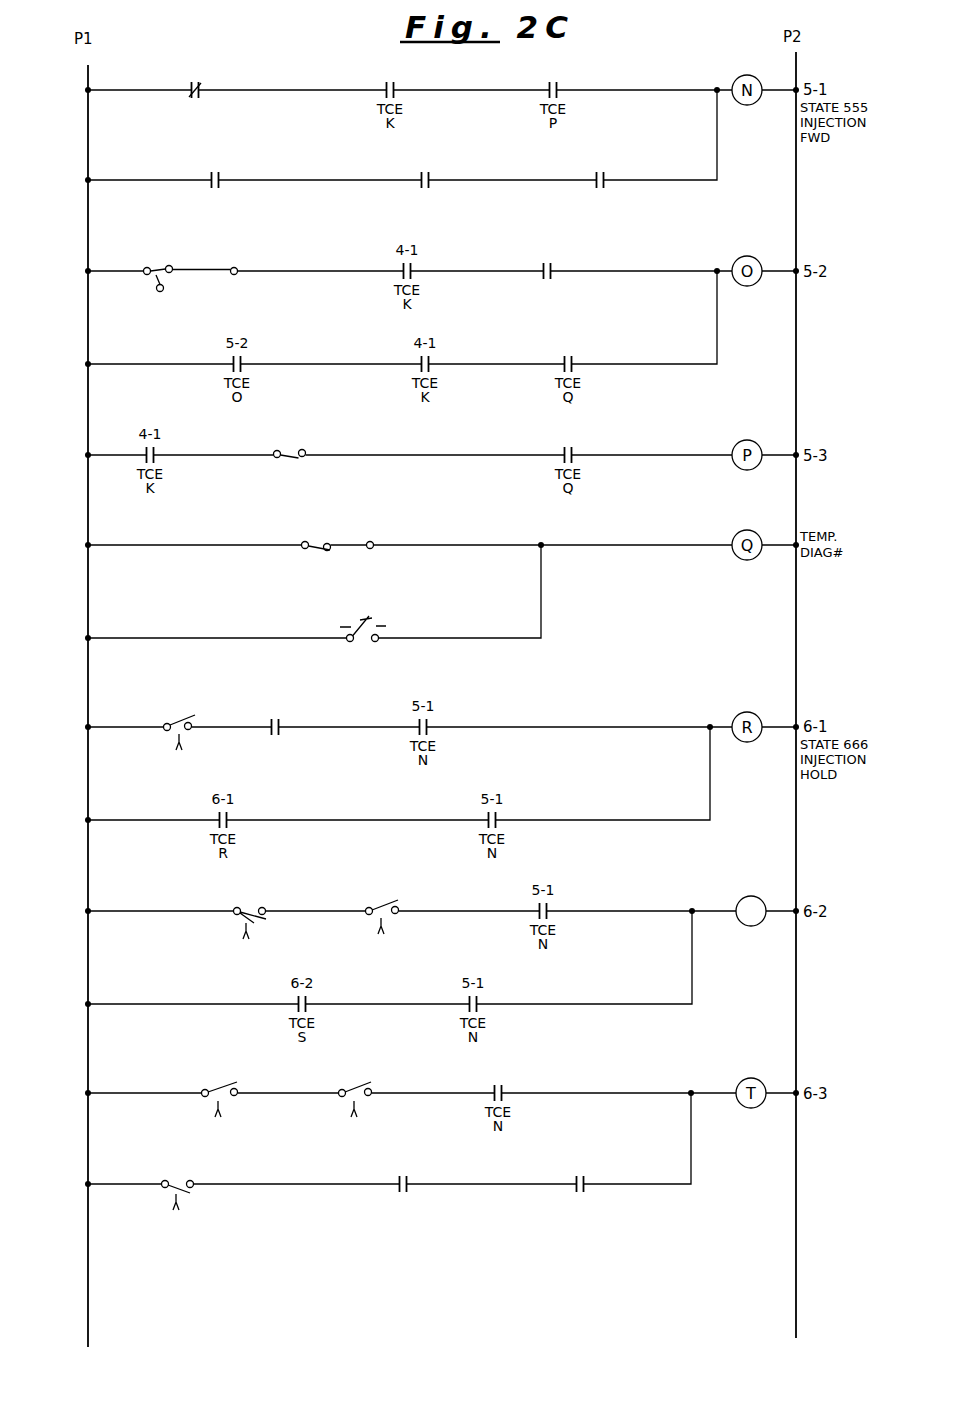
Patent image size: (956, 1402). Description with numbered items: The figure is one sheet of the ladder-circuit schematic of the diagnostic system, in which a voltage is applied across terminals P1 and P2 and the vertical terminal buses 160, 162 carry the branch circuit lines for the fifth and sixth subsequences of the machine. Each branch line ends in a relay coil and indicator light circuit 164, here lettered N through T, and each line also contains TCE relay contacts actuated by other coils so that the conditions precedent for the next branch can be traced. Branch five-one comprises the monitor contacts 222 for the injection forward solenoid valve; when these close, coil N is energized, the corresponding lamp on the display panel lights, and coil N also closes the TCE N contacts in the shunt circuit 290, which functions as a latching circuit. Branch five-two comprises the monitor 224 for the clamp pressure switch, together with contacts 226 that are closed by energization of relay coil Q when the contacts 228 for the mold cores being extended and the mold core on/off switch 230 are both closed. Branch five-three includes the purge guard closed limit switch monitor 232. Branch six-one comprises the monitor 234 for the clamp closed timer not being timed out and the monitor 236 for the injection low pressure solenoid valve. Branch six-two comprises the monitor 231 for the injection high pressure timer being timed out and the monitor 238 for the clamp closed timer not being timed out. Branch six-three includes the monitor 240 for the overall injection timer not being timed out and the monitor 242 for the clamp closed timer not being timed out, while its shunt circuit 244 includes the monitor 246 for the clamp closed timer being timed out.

The terminal bus 160 is at (88, 103).
The power rail P2 162 is at (797, 200).
The relay coil and indicator light circuit 164 is at (741, 897).
The monitor contacts for the injection forward solenoid valve 222 is at (193, 92).
The monitor for the clamp pressure switch 224 is at (170, 276).
The contacts 226 is at (553, 274).
The contacts for the mold cores being extended 228 is at (307, 553).
The mold core on/off switch 230 is at (314, 605).
The monitor for the injection high pressure timer 231 is at (240, 920).
The purge guard closed limit switch monitor 232 is at (294, 460).
The monitor for the clamp closed timer 234 is at (185, 731).
The monitor for the injection low pressure solenoid valve 236 is at (278, 735).
The monitor for the clamp closed timer 238 is at (385, 915).
The monitor for the overall injection timer 240 is at (224, 1097).
The monitor for the clamp closed timer 242 is at (361, 1097).
The shunt circuit 244 is at (389, 1158).
The monitor for the clamp closed timer being timed out 246 is at (188, 1193).
The shunt circuit 290 is at (272, 180).